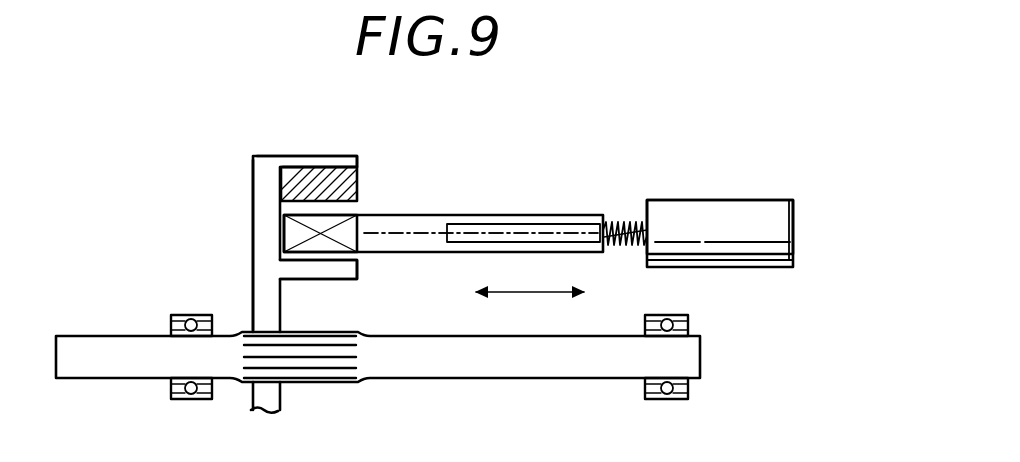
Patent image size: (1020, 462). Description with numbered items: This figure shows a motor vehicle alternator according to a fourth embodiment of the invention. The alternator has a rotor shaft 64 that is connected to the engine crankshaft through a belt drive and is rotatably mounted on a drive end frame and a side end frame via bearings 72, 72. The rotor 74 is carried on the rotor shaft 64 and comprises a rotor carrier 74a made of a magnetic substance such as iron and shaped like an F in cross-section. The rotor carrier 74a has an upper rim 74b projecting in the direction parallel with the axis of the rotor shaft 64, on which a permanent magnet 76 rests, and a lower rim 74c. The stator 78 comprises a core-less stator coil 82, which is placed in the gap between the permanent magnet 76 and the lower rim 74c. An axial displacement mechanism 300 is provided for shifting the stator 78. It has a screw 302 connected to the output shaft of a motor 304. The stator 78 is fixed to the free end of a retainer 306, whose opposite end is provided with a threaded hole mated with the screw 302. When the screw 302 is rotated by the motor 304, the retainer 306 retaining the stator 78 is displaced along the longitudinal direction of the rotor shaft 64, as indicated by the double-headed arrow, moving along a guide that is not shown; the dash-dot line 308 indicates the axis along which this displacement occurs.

The rotor shaft 64 is at (528, 370).
The bearings 72 is at (200, 397).
The rotor 74 is at (360, 144).
The rotor carrier 74a is at (260, 213).
The upper rim 74b is at (310, 162).
The lower rim 74c is at (303, 270).
The permanent magnet 76 is at (355, 190).
The stator 78 is at (445, 205).
The stator coil 82 is at (350, 234).
The axial displacement mechanism 300 is at (640, 188).
The screw 302 is at (633, 246).
The motor 304 is at (753, 210).
The retainer 306 is at (497, 253).
The axis line 308 is at (568, 220).